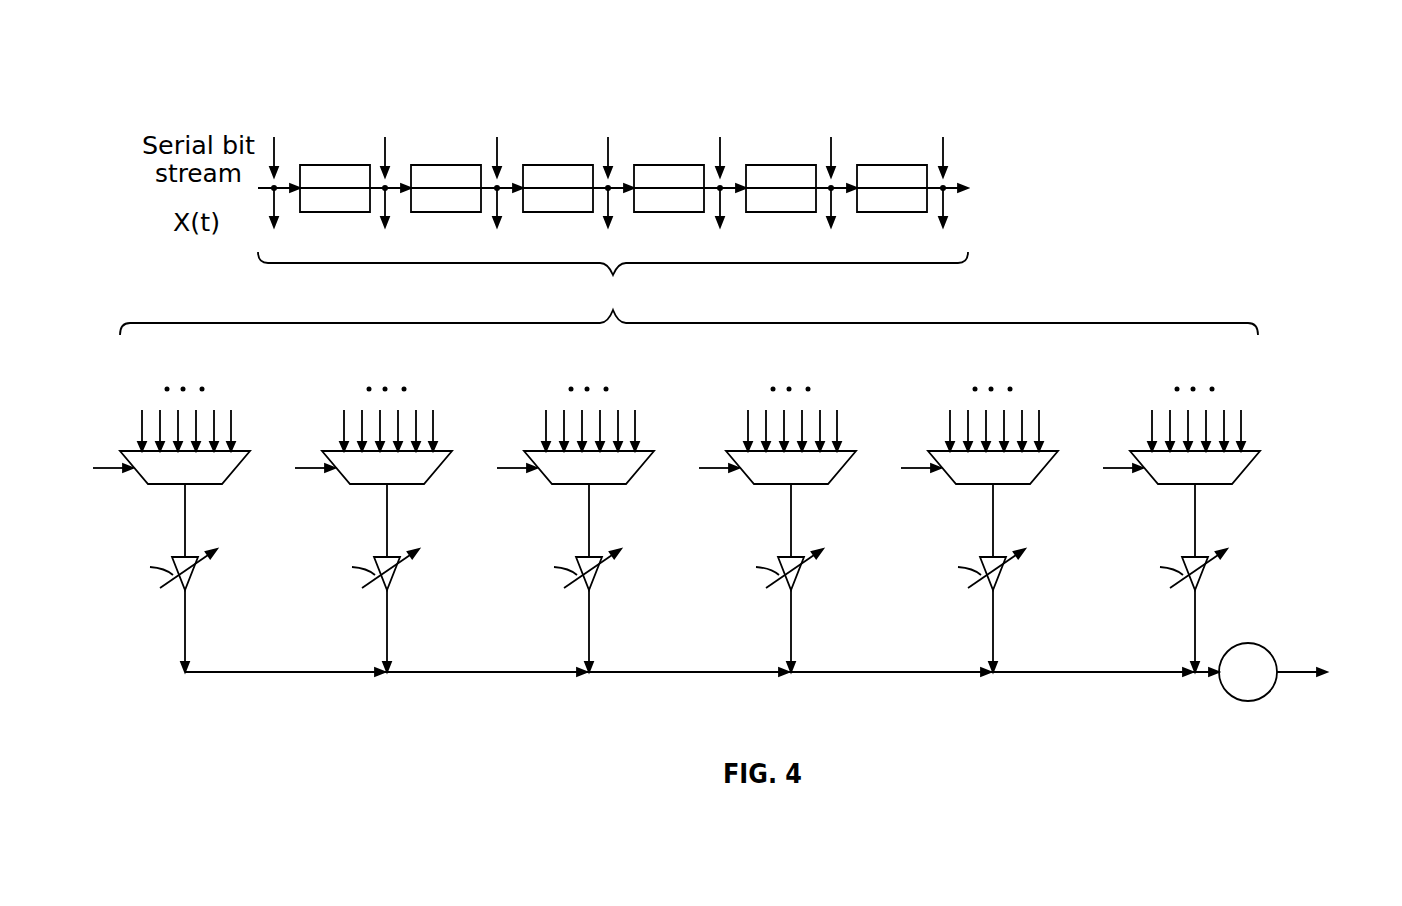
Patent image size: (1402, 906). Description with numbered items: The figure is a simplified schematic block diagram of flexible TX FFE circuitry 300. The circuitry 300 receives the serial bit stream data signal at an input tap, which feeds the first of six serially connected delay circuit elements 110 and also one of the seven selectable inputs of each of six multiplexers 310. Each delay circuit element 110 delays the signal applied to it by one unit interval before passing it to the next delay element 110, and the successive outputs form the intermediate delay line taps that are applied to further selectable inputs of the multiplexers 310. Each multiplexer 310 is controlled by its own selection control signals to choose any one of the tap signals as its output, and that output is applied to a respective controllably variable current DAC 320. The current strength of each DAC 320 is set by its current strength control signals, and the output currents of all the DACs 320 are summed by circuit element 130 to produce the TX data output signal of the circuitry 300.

The TX FFE circuitry 300 is at (270, 81).
The delay circuit element 110 is at (613, 159).
The multiplexer 310 is at (656, 465).
The controllably variable current DAC 320 is at (683, 600).
The summing circuit element 130 is at (1248, 643).